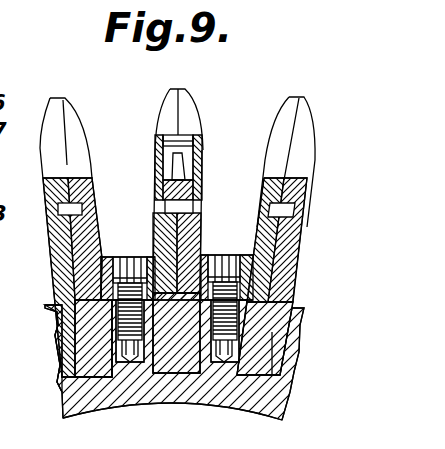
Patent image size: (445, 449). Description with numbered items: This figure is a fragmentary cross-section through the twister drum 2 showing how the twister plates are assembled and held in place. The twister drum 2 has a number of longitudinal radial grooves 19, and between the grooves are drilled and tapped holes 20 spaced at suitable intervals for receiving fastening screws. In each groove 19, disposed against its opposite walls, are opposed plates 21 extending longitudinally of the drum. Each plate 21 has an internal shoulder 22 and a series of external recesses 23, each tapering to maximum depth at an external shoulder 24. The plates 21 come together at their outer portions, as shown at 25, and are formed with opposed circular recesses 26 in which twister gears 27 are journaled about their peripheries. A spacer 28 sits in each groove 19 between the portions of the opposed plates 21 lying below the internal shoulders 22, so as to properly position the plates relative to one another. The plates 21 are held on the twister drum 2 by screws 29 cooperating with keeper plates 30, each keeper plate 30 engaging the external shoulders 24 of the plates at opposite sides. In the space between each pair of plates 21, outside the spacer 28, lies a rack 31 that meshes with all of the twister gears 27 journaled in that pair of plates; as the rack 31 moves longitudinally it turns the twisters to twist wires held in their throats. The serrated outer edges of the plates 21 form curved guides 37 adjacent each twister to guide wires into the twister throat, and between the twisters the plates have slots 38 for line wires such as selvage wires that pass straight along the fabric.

The twister drum 2 is at (133, 398).
The longitudinal radial groove 19 is at (268, 362).
The drilled and tapped hole 20 is at (185, 403).
The plate 21 is at (66, 233).
The internal shoulder 22 is at (43, 330).
The external recess 23 is at (292, 257).
The external shoulder 24 is at (203, 258).
The outer portions of plates coming together 25 is at (66, 160).
The circular recess 26 is at (168, 150).
The twister gear 27 is at (180, 177).
The spacer 28 is at (60, 352).
The screw 29 is at (123, 272).
The keeper plate 30 is at (100, 262).
The rack 31 is at (196, 195).
The curved guide 37 is at (173, 103).
The slot 38 is at (72, 127).